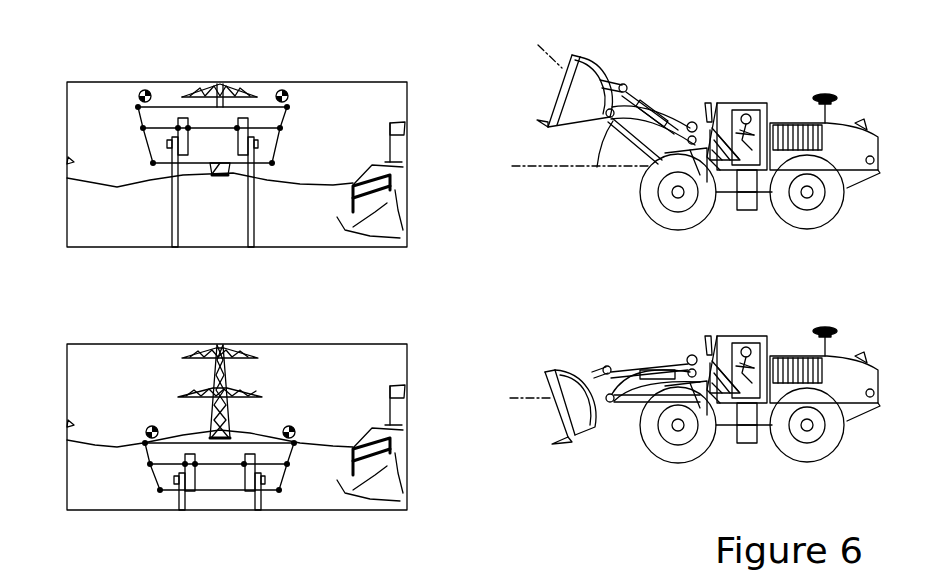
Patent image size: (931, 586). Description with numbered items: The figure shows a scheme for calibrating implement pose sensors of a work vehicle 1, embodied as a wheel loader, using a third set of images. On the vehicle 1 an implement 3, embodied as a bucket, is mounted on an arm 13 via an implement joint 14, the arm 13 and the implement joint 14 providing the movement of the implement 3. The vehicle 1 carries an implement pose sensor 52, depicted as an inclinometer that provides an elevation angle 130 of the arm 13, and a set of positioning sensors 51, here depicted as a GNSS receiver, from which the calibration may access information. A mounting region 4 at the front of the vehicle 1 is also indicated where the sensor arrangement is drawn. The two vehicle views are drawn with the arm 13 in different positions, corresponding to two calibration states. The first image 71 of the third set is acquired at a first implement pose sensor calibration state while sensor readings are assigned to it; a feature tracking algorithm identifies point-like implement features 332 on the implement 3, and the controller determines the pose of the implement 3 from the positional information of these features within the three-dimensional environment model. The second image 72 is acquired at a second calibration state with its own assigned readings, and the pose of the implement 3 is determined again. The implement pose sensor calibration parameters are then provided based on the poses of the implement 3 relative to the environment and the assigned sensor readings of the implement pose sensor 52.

The work vehicle 1 is at (695, 73).
The implement 3 is at (178, 107).
The lift cylinder mounting bracket 4 is at (676, 234).
The arm 13 is at (658, 108).
The implement joint 14 is at (560, 123).
The positioning sensors 51 is at (825, 92).
The implement pose sensor 52 is at (658, 106).
The first image of the third set 71 is at (292, 82).
The second image of the third set 72 is at (292, 344).
The elevation angle 130 is at (598, 140).
The point-like implement features 332 is at (152, 163).